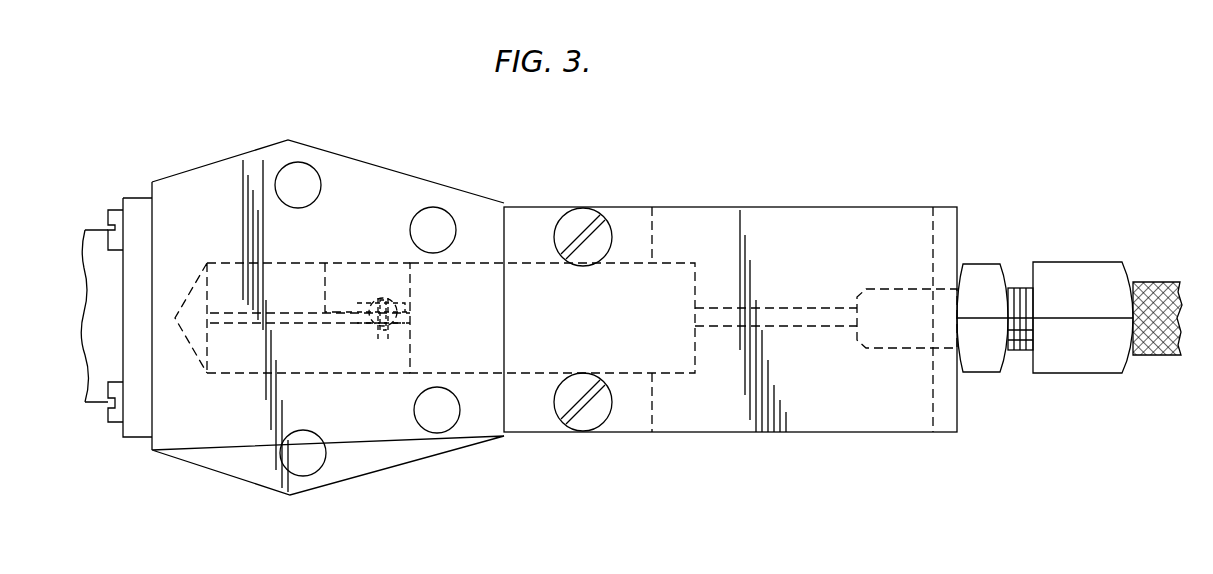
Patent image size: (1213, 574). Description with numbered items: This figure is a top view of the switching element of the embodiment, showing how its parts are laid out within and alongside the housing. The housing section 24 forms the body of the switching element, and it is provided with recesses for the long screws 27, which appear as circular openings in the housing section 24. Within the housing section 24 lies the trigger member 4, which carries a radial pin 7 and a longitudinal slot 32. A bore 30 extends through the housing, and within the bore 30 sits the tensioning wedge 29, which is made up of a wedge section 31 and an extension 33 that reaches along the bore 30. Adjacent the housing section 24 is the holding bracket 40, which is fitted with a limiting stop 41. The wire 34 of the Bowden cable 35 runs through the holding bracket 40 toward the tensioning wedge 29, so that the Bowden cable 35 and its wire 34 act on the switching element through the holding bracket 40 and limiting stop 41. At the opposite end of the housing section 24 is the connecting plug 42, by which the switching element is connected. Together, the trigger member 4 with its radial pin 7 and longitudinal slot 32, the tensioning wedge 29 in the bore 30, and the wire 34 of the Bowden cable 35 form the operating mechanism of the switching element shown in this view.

The trigger member 4 is at (406, 303).
The radial pin 7 is at (384, 298).
The housing section 24 is at (236, 470).
The recesses for the long screws 27 is at (428, 422).
The tensioning wedge 29 is at (690, 272).
The bore 30 is at (218, 262).
The wedge section 31 is at (325, 262).
The longitudinal slot 32 is at (372, 297).
The extension 33 is at (254, 312).
The wire 34 is at (805, 328).
The Bowden cable 35 is at (1152, 346).
The holding bracket 40 is at (741, 410).
The limiting stop 41 is at (895, 335).
The connecting plug 42 is at (100, 348).